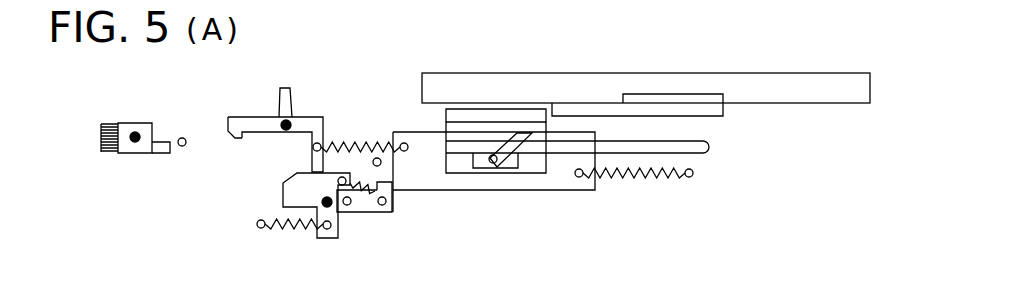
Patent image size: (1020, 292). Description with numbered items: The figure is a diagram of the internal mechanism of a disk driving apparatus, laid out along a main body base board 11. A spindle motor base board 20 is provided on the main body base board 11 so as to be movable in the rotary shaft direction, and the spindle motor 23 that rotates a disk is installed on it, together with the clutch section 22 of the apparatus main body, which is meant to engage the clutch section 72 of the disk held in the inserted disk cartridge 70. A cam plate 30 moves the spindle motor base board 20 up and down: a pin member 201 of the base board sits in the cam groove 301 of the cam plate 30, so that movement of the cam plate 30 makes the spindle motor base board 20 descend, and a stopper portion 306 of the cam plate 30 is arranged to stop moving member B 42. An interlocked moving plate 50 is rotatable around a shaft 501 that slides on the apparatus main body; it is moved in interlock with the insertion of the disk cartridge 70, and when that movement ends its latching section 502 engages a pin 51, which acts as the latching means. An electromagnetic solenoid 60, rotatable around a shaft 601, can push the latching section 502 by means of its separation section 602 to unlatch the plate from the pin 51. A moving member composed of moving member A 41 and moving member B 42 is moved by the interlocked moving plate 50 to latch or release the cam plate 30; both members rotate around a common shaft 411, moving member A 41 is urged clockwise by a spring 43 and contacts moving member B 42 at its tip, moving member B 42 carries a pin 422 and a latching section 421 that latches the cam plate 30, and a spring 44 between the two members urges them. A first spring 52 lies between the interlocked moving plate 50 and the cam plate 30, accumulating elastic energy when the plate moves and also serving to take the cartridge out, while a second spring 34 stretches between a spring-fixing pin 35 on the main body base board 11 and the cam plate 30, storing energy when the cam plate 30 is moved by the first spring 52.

The main body base board 11 is at (646, 80).
The spindle motor base board 20 is at (709, 147).
The clutch section 22 is at (528, 113).
The spindle motor 23 is at (478, 125).
The cam plate 30 is at (573, 191).
The cam groove 301 is at (522, 153).
The stopper portion 306 is at (398, 182).
The pin member 201 is at (495, 168).
The second spring 34 is at (638, 178).
The spring-fixing pin 35 is at (690, 178).
The moving member A 41 is at (287, 192).
The shaft 411 is at (330, 207).
The moving member B 42 is at (387, 205).
The latching section 421 is at (392, 192).
The pin 422 is at (348, 206).
The spring 43 is at (283, 230).
The spring 44 is at (363, 197).
The interlocked moving plate 50 is at (252, 117).
The shaft 501 is at (292, 123).
The latching section 502 is at (232, 138).
The pin 51 is at (184, 147).
The first spring 52 is at (363, 142).
The electromagnetic solenoid 60 is at (108, 154).
The shaft 601 is at (140, 122).
The separation section 602 is at (158, 154).
The disk cartridge 70 is at (643, 80).
The clutch section 72 is at (697, 100).